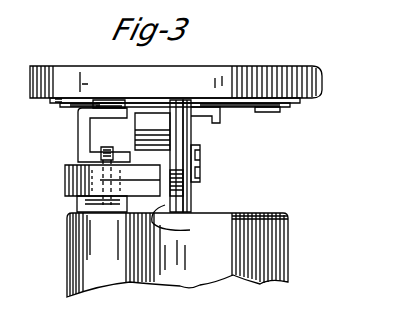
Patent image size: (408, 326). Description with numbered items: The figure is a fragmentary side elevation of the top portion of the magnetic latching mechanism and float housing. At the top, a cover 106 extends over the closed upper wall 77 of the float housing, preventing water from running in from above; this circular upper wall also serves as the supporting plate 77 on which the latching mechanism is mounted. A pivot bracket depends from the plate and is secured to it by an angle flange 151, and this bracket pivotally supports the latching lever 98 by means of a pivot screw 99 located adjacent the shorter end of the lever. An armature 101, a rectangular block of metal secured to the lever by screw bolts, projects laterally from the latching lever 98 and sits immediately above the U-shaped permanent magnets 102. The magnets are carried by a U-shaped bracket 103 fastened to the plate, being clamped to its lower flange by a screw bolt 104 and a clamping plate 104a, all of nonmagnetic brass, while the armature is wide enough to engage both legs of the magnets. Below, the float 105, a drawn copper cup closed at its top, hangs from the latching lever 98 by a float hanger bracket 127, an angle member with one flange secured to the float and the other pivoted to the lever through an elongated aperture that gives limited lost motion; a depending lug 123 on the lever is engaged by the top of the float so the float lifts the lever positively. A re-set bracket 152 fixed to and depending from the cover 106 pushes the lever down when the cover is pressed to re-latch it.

The upper wall / supporting plate 77 is at (299, 100).
The latching lever 98 is at (181, 107).
The pivot screw 99 is at (200, 163).
The armature 101 is at (136, 136).
The permanent magnets 102 is at (158, 163).
The U-shaped bracket 103 is at (78, 150).
The screw bolt 104 is at (116, 143).
The clamping plate 104a is at (80, 207).
The float 105 is at (296, 200).
The cover 106 is at (278, 70).
The depending lug 123 is at (170, 228).
The float hanger bracket 127 is at (192, 194).
The angle flange 151 is at (212, 122).
The re-set bracket 152 is at (191, 127).